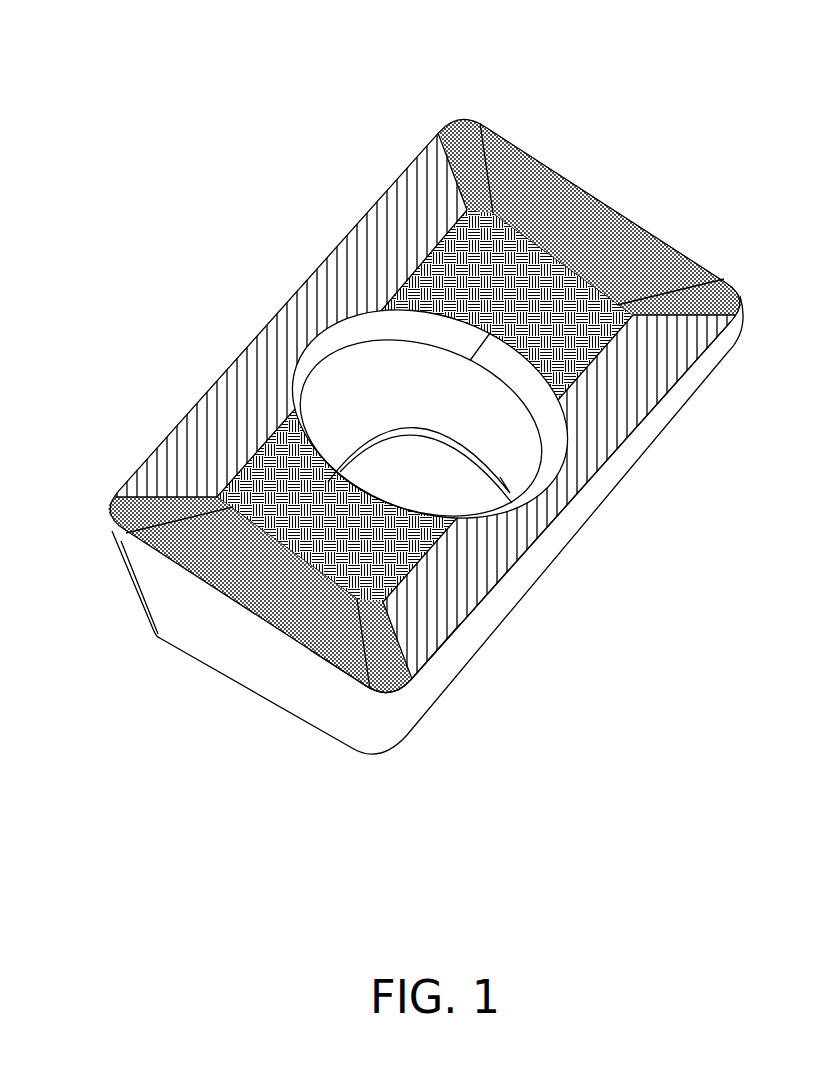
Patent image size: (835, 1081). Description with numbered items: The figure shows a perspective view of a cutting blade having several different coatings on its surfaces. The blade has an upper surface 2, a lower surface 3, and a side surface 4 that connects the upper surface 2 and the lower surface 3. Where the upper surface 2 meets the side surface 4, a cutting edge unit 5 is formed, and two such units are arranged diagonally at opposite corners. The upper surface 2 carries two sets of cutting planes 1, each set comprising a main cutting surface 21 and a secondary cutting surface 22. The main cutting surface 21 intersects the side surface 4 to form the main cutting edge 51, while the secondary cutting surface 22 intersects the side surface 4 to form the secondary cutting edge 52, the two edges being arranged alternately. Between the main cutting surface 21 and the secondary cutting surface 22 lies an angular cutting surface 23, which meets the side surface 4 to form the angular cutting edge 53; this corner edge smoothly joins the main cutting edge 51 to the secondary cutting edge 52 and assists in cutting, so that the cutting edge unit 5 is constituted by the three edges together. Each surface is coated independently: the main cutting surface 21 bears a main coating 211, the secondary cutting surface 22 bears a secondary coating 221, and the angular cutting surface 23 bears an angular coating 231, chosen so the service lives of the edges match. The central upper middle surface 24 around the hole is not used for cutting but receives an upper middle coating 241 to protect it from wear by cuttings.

The cutting plane 1 is at (90, 700).
The upper surface 2 is at (358, 302).
The main cutting surface 21 is at (302, 324).
The main coating 211 is at (612, 420).
The secondary cutting surface 22 is at (627, 253).
The secondary coating 221 is at (243, 560).
The angular cutting surface 23 is at (464, 148).
The angular coating 231 is at (469, 190).
The upper middle surface 24 is at (527, 291).
The upper middle coating 241 is at (290, 510).
The lower surface 3 is at (551, 582).
The side surface 4 is at (607, 492).
The cutting edge unit 5 is at (570, 753).
The main cutting edge 51 is at (430, 673).
The secondary cutting edge 52 is at (347, 680).
The angular cutting edge 53 is at (397, 697).